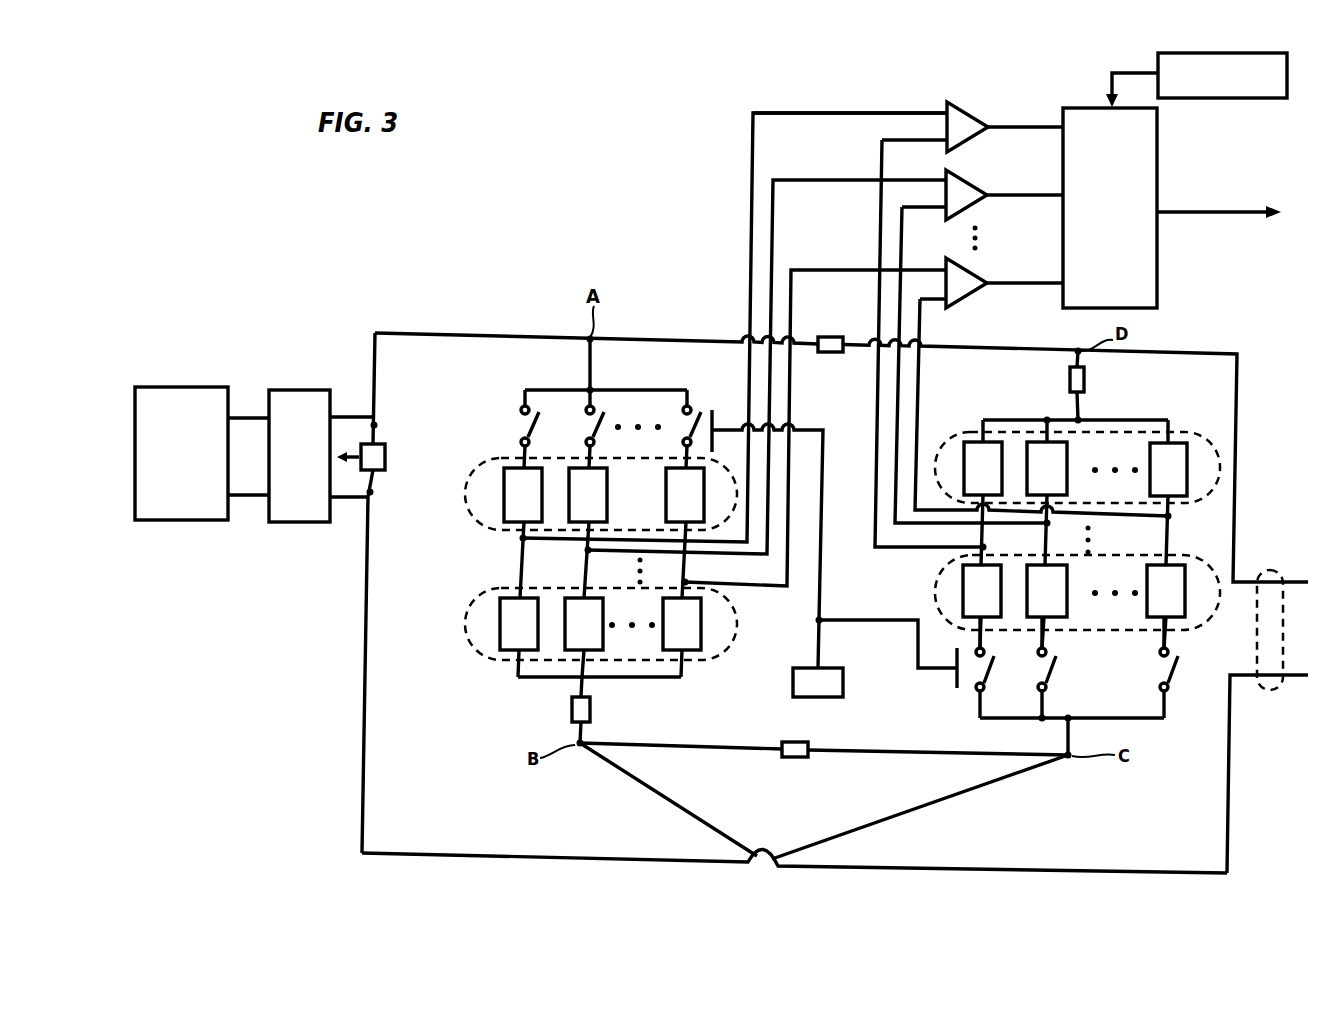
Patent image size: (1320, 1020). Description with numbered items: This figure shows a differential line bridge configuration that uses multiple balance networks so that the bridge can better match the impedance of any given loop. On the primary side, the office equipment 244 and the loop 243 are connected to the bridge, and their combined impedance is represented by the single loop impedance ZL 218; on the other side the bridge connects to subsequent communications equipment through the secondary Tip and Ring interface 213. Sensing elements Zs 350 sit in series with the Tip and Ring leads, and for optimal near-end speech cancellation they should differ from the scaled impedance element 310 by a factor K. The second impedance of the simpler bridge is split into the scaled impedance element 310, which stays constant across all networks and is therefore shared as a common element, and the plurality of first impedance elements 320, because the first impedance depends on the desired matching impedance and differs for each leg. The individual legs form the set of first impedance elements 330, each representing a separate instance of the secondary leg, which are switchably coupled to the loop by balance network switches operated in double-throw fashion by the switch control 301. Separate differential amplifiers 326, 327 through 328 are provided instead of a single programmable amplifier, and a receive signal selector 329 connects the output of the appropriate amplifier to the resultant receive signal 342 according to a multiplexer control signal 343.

The office equipment 244 is at (199, 387).
The loop 243 is at (292, 390).
The loop or line impedance ZL 218 is at (385, 463).
The switch control 301 is at (843, 688).
The differential amplifier G1 326 is at (975, 112).
The differential amplifier G2 327 is at (975, 183).
The differential amplifier Gn 328 is at (988, 270).
The receive signal selector 329 is at (1157, 286).
The resultant receive signal 342 is at (1233, 212).
The multiplexer control signal 343 is at (1112, 73).
The sensing element Zs 350 is at (831, 352).
The impedance element KZs 310 is at (572, 712).
The plurality of Z1a through Z1n impedance elements 320 is at (470, 618).
The set of elements Z1a through Z1n 330 is at (470, 478).
The secondary Tip and Ring interface 213 is at (1268, 572).